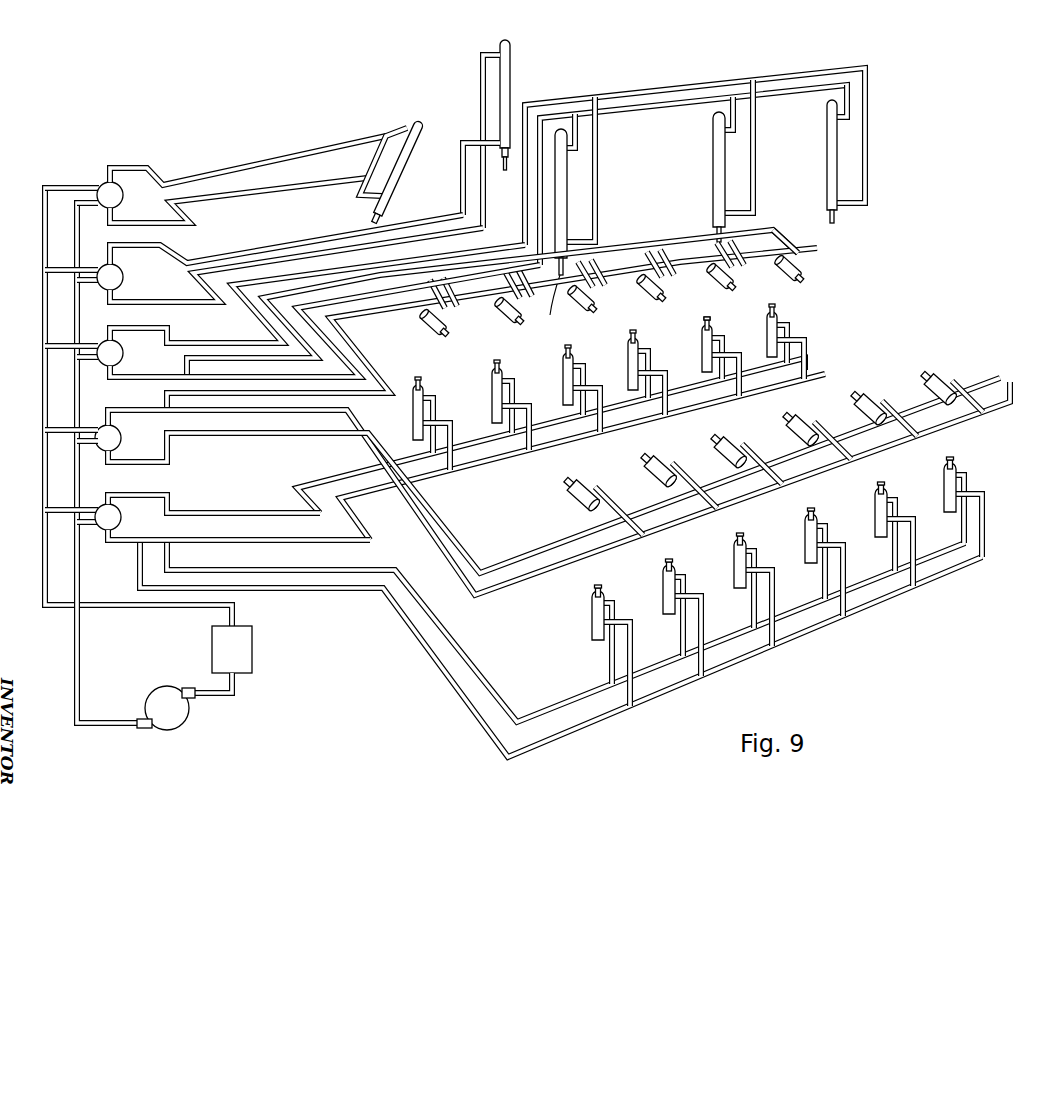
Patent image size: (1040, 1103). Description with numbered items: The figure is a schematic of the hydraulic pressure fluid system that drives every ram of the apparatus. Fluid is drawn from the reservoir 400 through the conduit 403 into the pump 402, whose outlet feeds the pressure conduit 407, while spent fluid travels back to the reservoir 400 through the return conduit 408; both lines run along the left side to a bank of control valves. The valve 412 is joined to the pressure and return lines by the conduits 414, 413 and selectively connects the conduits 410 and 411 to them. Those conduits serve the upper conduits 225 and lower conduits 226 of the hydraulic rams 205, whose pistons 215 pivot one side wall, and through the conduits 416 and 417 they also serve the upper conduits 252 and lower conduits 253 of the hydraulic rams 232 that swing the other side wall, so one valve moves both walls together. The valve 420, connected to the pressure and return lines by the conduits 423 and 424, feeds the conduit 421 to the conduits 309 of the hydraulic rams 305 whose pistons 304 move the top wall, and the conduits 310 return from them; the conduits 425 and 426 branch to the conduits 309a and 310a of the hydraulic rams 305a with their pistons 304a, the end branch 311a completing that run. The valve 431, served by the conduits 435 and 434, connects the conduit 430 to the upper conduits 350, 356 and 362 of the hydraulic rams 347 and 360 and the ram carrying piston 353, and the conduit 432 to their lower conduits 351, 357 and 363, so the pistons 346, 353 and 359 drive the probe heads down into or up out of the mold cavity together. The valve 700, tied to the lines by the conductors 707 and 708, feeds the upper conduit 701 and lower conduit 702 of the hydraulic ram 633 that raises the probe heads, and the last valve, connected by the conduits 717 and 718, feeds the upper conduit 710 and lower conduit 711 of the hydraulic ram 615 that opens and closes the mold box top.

The hydraulic ram 205 is at (413, 413).
The piston 215 is at (712, 330).
The upper conduit 225 is at (432, 395).
The lower conduit 226 is at (445, 423).
The hydraulic ram 232 is at (591, 625).
The upper conduit 252 is at (610, 600).
The lower conduit 253 is at (618, 628).
The piston 304 is at (570, 488).
The hydraulic ram 305 is at (572, 503).
The conduit 309 is at (618, 505).
The conduit 310 is at (590, 485).
The piston 304a is at (515, 330).
The hydraulic ram 305a is at (430, 330).
The conduit 309a is at (445, 315).
The conduit 310a is at (445, 330).
The end branch pipe 311a is at (830, 245).
The piston 346 is at (552, 295).
The hydraulic ram 347 is at (568, 196).
The upper conduit 350 is at (575, 150).
The lower conduit 351 is at (595, 244).
The piston 353 is at (712, 165).
The upper conduit 356 is at (733, 130).
The lower conduit 357 is at (753, 213).
The piston 359 is at (837, 215).
The hydraulic ram 360 is at (827, 165).
The upper conduit 362 is at (836, 118).
The lower conduit 363 is at (865, 195).
The reservoir 400 is at (252, 650).
The pump 402 is at (189, 715).
The conduit 403 is at (235, 692).
The pressure conduit 407 is at (95, 672).
The return conduit 408 is at (44, 540).
The conduit 410 is at (328, 540).
The conduit 411 is at (333, 485).
The valve 412 is at (232, 517).
The meter return connection 413 is at (90, 538).
The meter supply connection 414 is at (74, 498).
The conduit 416 is at (583, 730).
The conduit 417 is at (560, 703).
The valve 420 is at (123, 438).
The conduit 421 is at (540, 580).
The conduit 423 is at (74, 416).
The conduit 424 is at (90, 456).
The conduit 425 is at (390, 292).
The conduit 426 is at (388, 320).
The conduit 430 is at (655, 112).
The valve 431 is at (318, 311).
The conduit 432 is at (680, 92).
The conduit 434 is at (74, 334).
The conduit 435 is at (90, 373).
The hydraulic ram 615 is at (405, 170).
The hydraulic ram 633 is at (511, 71).
The valve 700 is at (290, 258).
The upper conduit 701 is at (490, 55).
The lower conduit 702 is at (483, 140).
The conductor 707 is at (90, 292).
The conductor 708 is at (74, 255).
The upper conduit 710 is at (405, 128).
The lower conduit 711 is at (375, 210).
The conduit 717 is at (92, 217).
The conduit 718 is at (72, 180).